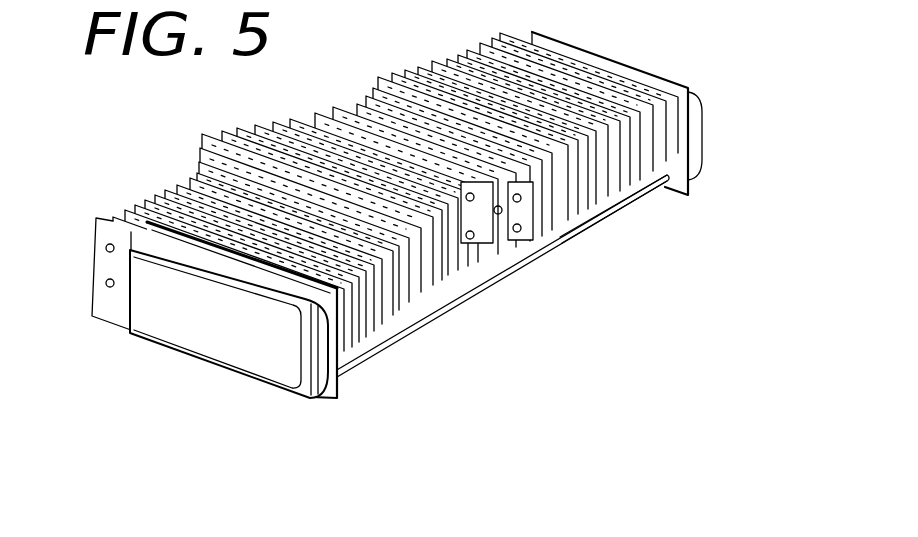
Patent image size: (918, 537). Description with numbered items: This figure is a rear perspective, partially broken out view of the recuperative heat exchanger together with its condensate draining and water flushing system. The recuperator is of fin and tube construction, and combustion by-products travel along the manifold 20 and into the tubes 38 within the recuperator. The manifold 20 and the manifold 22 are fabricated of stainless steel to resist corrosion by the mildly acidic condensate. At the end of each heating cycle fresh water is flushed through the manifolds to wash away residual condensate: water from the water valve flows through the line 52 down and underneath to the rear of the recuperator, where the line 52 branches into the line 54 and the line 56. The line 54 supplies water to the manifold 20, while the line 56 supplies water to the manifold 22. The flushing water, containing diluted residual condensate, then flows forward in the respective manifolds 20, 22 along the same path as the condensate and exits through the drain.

The manifold 20 is at (214, 361).
The manifold 22 is at (700, 115).
The tubes 38 is at (110, 287).
The line 52 is at (478, 264).
The line 54 is at (403, 339).
The line 56 is at (603, 222).